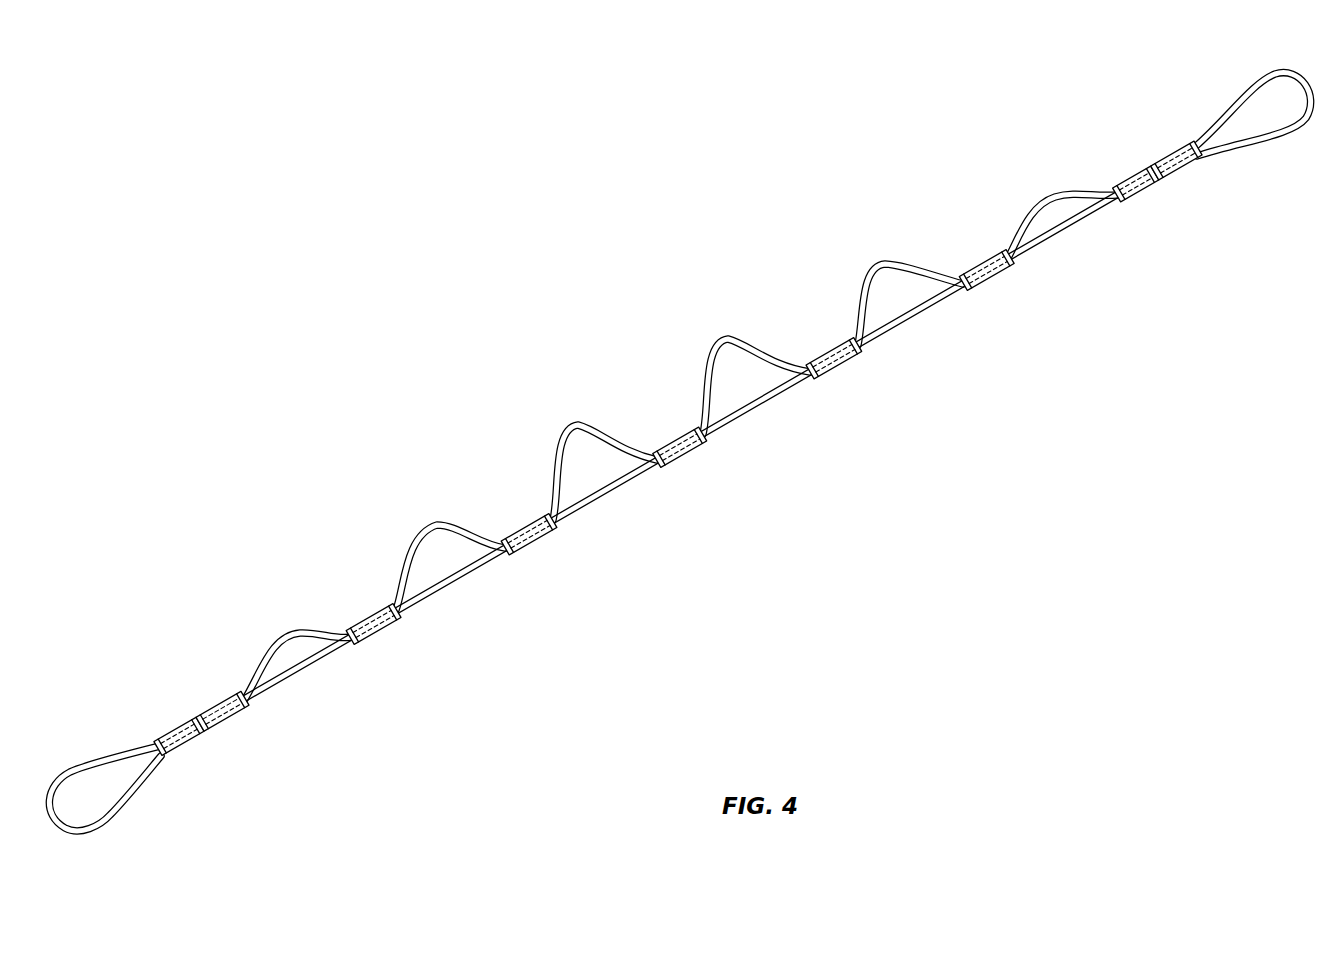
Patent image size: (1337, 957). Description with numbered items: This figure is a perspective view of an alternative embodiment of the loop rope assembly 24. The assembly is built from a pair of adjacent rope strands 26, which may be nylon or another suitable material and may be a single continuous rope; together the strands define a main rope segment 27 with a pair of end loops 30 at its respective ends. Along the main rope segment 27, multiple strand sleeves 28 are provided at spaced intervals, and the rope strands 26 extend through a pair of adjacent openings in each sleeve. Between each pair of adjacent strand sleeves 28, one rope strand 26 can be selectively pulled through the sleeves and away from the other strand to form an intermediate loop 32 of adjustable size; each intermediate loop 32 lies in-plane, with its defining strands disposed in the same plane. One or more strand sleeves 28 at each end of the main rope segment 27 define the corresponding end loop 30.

The loop rope assembly 24 is at (679, 452).
The rope strand 26 is at (418, 575).
The main rope segment 27 is at (612, 503).
The strand sleeve 28 is at (187, 738).
The end loop 30 is at (104, 748).
The intermediate loop 32 is at (705, 387).